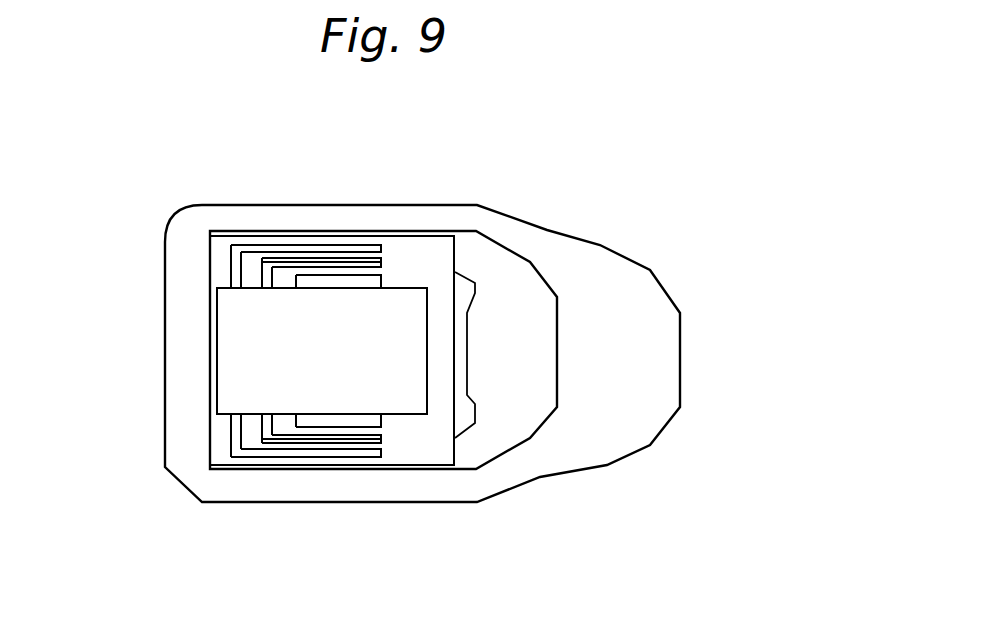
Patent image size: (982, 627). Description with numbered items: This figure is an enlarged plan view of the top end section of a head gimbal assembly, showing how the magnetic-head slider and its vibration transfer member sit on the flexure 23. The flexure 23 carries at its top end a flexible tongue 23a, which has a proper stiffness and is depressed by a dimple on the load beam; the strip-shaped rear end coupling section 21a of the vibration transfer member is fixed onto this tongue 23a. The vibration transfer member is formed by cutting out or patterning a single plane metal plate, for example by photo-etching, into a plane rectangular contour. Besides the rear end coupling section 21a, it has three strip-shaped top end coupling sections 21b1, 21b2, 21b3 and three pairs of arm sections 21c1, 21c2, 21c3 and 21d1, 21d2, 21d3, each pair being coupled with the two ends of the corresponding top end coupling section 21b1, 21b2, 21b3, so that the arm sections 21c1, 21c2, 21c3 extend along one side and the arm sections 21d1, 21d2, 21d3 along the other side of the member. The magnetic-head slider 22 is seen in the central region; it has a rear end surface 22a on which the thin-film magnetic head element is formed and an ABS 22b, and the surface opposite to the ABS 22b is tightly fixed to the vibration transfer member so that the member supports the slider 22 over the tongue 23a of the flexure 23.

The flexure 23 is at (652, 300).
The flexible tongue 23a is at (468, 297).
The rear end coupling section 21a is at (427, 260).
The magnetic-head slider 22 is at (227, 398).
The rear end surface 22a is at (212, 352).
The ABS 22b is at (345, 361).
The first top end coupling section 21b1 is at (217, 245).
The second top end coupling section 21b2 is at (250, 264).
The third top end coupling section 21b3 is at (283, 280).
The first arm section 21c1 is at (264, 240).
The second arm section 21c2 is at (308, 257).
The third arm section 21c3 is at (350, 272).
The first paired arm section 21d1 is at (248, 462).
The second paired arm section 21d2 is at (317, 448).
The third paired arm section 21d3 is at (350, 432).